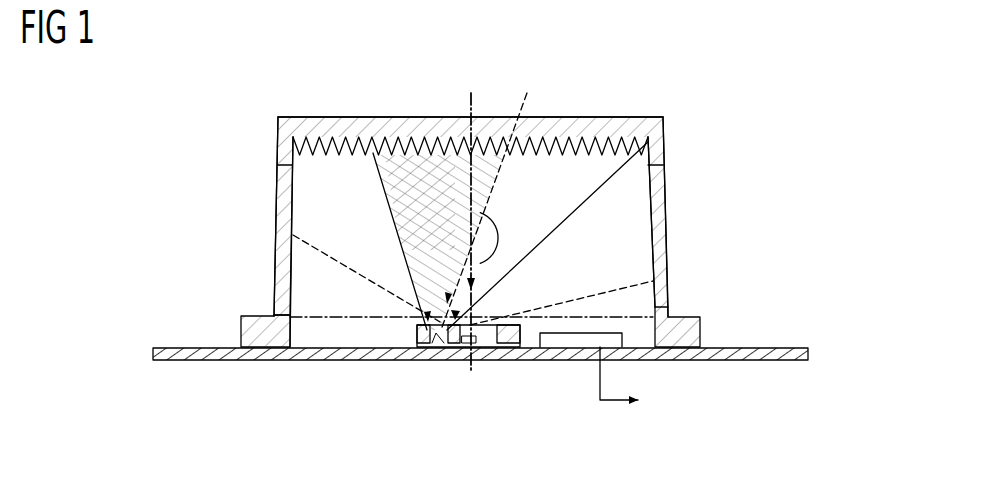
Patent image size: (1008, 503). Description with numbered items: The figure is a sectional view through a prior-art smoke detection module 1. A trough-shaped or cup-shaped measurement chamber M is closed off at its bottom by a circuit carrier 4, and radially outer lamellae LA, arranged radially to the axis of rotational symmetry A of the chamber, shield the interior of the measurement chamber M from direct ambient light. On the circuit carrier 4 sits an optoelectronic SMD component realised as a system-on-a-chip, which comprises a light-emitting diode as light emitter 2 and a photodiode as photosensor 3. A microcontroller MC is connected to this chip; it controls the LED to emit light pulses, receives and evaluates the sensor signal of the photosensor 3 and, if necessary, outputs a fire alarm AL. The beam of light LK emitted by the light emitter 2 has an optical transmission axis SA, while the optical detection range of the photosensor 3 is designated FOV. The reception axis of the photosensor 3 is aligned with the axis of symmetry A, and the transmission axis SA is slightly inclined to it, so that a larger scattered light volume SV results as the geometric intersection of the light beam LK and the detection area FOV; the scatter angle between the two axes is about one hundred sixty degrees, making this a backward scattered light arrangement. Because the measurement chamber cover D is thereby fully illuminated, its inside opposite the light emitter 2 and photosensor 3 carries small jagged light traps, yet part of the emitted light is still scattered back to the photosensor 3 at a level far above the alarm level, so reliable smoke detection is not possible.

The smoke detection module 1 is at (632, 65).
The light emitter 2 is at (438, 345).
The photosensor 3 is at (477, 345).
The circuit carrier 4 is at (302, 350).
The measurement chamber cover D is at (351, 125).
The measurement chamber M is at (664, 117).
The lamellae LA is at (276, 220).
The beam of light LK is at (395, 227).
The optical transmission axis SA is at (493, 194).
The axis of symmetry A is at (469, 214).
The scattered light volume SV is at (471, 243).
The optical detection range FOV is at (600, 293).
The microcontroller MC is at (578, 348).
The fire alarm AL is at (639, 382).